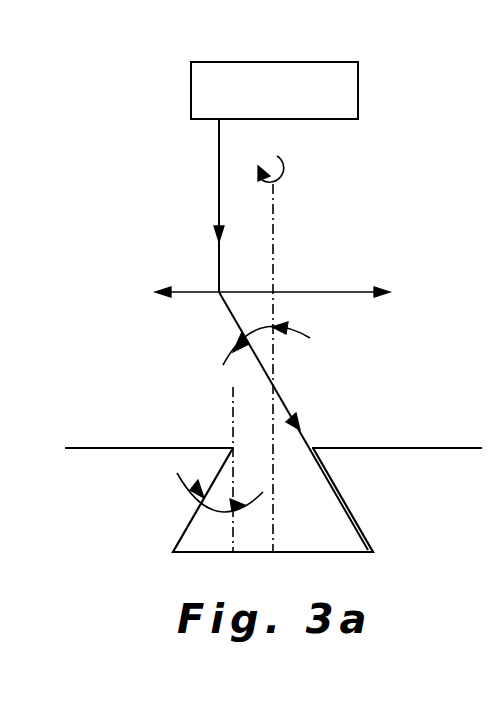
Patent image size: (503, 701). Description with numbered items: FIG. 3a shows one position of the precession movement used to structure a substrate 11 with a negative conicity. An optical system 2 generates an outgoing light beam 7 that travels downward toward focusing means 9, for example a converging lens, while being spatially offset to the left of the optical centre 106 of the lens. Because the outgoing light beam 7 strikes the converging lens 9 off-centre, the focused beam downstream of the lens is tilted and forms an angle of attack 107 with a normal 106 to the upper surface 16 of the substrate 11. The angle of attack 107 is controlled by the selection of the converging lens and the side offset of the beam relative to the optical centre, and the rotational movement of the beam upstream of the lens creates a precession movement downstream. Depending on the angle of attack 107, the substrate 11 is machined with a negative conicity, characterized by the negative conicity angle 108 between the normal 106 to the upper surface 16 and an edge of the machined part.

The optical system 2 is at (238, 80).
The outgoing light beam 7 is at (218, 194).
The focusing means 9 is at (342, 291).
The substrate 11 is at (422, 495).
The upper surface 16 is at (125, 447).
The optical centre 106 is at (275, 228).
The angle of attack 107 is at (273, 303).
The negative conicity angle 108 is at (207, 510).